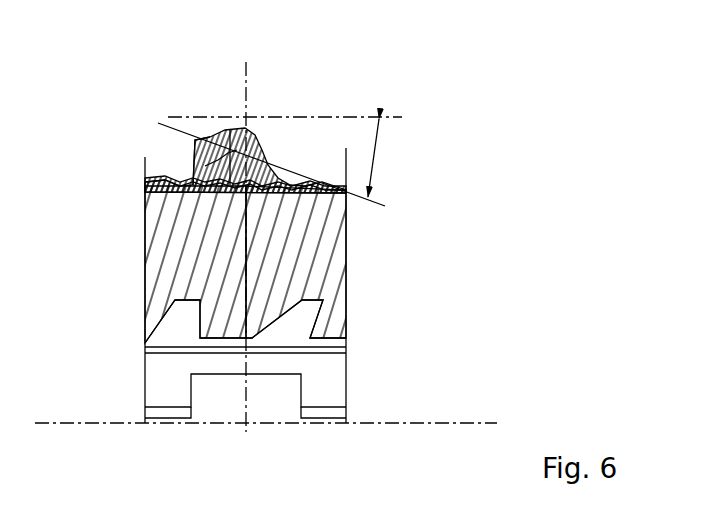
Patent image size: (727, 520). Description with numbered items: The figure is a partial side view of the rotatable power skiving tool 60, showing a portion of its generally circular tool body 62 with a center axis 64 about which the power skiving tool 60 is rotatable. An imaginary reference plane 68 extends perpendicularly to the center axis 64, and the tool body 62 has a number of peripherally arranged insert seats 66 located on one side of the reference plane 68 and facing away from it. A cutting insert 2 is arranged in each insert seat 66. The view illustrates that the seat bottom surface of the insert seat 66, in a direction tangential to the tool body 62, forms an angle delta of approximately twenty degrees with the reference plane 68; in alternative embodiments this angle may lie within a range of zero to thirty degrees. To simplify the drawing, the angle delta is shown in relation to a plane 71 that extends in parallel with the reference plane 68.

The rotatable power skiving tool 60 is at (126, 117).
The tool body 62 is at (164, 289).
The cutting insert 2 is at (268, 172).
The insert seat 66 is at (203, 187).
The center axis 64 is at (246, 82).
The plane 71 is at (387, 117).
The reference plane 68 is at (432, 423).